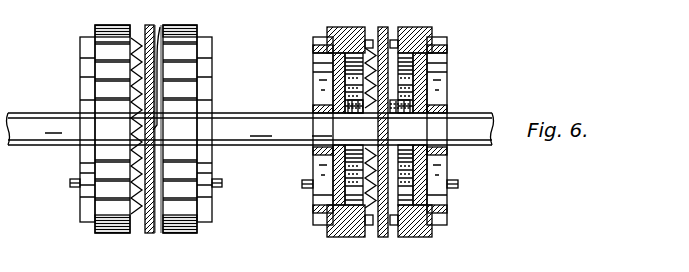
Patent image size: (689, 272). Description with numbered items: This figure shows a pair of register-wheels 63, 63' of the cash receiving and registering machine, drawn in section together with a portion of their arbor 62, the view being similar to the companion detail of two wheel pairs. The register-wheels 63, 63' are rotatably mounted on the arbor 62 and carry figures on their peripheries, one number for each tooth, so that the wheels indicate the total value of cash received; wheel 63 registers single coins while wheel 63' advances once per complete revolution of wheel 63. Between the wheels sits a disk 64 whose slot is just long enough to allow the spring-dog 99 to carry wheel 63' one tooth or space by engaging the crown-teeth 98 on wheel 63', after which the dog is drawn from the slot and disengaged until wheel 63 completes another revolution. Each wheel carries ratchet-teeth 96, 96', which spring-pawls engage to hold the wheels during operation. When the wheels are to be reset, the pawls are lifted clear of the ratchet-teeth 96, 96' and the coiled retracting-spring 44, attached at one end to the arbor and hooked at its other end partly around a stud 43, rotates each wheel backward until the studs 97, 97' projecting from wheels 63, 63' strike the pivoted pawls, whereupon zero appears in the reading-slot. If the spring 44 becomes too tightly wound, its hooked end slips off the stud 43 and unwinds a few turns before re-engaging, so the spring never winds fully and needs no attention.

The arbor 62 is at (268, 113).
The register-wheel 63 is at (306, 140).
The register-wheel 63' is at (228, 140).
The disk 64 is at (150, 233).
The ratchet-teeth 96 is at (338, 134).
The ratchet-teeth 96' is at (183, 132).
The stud 97 is at (346, 185).
The stud 97' is at (178, 184).
The crown-teeth 98 is at (136, 38).
The spring-dog 99 is at (165, 121).
The stud 43 is at (360, 113).
The coiled spring 44 is at (354, 113).